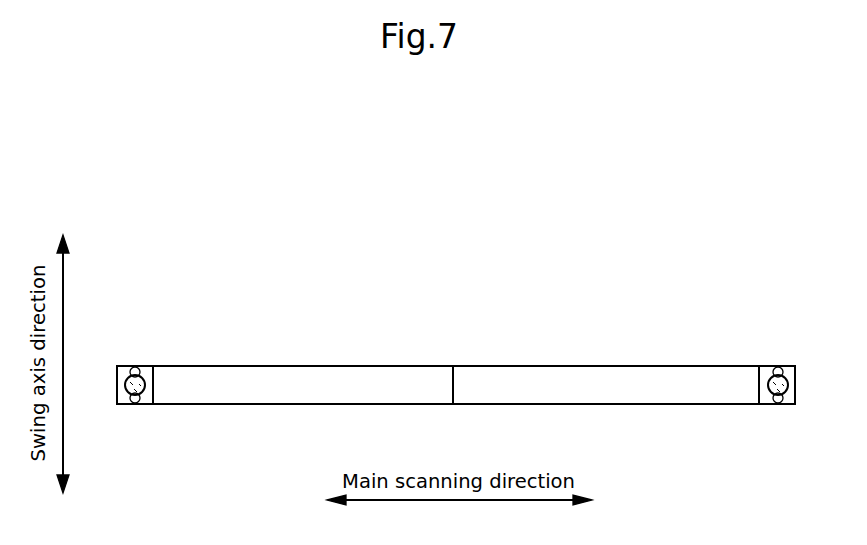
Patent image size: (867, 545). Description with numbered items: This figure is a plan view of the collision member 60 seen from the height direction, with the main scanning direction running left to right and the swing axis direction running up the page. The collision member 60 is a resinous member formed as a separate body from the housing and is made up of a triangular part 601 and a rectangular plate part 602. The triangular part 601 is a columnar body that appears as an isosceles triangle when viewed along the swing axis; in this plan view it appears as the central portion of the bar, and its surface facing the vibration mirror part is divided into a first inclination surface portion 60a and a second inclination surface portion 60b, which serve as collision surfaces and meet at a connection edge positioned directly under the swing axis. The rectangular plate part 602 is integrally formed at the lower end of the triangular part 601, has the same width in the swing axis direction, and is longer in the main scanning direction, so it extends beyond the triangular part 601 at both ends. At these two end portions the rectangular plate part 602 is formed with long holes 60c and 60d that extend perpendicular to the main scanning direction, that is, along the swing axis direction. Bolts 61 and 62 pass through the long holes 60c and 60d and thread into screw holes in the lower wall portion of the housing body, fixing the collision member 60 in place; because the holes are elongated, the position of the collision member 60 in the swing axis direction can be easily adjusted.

The collision member 60 is at (453, 335).
The triangular part 601 is at (240, 366).
The rectangular plate part 602 is at (145, 366).
The first inclination surface portion 60a is at (358, 382).
The second inclination surface portion 60b is at (594, 388).
The bolt 61 is at (141, 366).
The bolt 62 is at (779, 378).
The long hole 60c is at (135, 405).
The long hole 60d is at (773, 405).